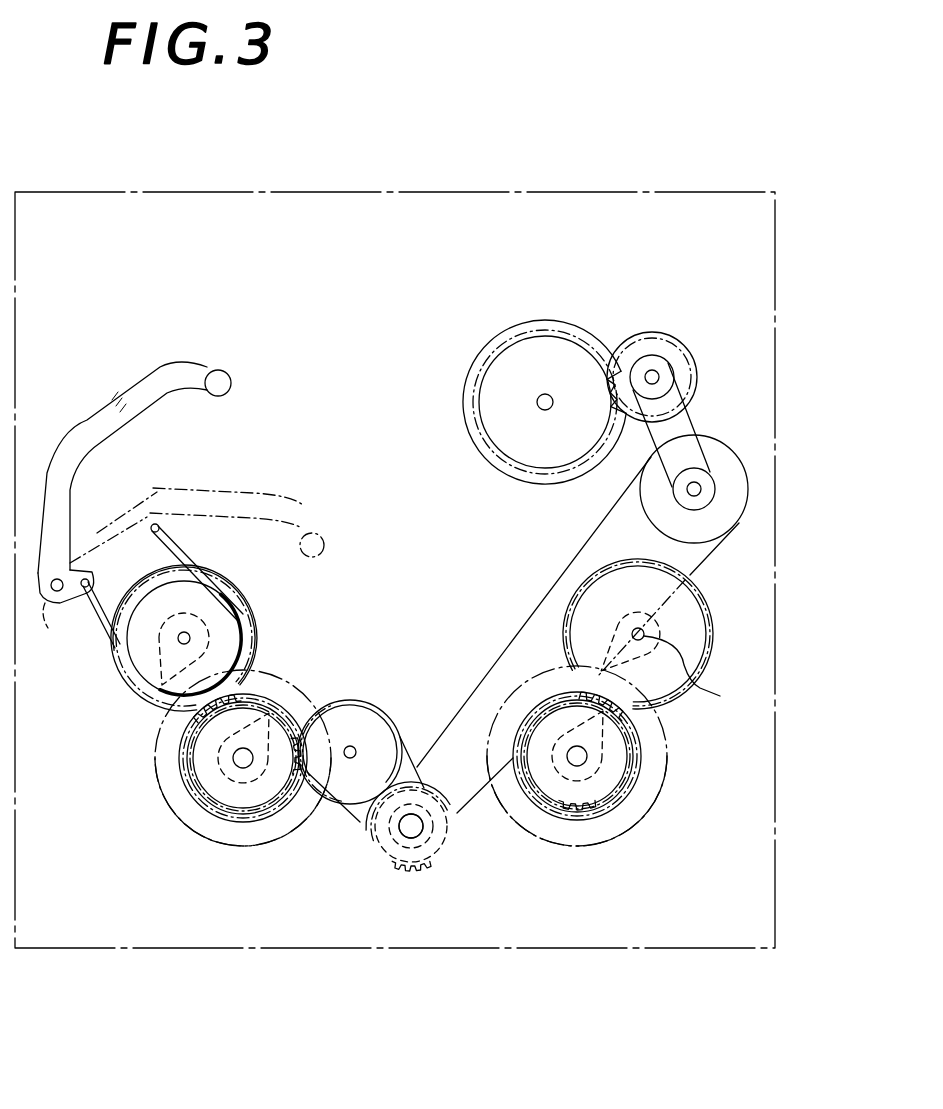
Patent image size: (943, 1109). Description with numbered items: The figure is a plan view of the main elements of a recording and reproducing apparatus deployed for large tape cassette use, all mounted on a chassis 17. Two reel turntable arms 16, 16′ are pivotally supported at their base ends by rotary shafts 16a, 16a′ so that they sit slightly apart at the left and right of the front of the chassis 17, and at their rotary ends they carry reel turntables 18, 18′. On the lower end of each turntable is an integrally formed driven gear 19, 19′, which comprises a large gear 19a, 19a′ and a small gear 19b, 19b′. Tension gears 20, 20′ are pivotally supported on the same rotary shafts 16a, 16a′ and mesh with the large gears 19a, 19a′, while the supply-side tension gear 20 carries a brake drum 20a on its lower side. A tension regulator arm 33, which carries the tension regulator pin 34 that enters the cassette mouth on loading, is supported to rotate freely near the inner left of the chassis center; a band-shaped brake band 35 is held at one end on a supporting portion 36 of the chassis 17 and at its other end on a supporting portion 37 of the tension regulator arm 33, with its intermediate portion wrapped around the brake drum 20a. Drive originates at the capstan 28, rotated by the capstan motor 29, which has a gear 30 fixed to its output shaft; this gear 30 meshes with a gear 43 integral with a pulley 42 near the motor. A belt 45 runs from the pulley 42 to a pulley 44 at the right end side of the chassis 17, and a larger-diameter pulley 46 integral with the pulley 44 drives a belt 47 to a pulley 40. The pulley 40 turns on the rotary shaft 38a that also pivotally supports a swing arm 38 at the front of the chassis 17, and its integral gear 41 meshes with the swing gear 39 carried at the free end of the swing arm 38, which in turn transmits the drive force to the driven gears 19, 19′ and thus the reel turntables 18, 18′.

The chassis 17 is at (643, 192).
The tension regulator arm 33 is at (120, 393).
The tension regulator pin 34 is at (220, 368).
The brake band 35 is at (198, 552).
The supporting portion 36 is at (153, 524).
The supporting portion 37 is at (55, 608).
The reel turntable arm 16 is at (242, 638).
The rotary shaft 16a is at (189, 634).
The tension gear 20 is at (130, 588).
The brake drum 20a is at (107, 640).
The driven gear 19 is at (168, 747).
The large gear 19a is at (193, 785).
The small gear 19b is at (217, 803).
The reel turntable 18 is at (222, 848).
The swing gear 39 is at (360, 700).
The swing arm 38 is at (357, 818).
The rotary shaft 38a is at (419, 860).
The pulley 40 is at (392, 848).
The gear 41 is at (455, 832).
The capstan motor 29 is at (548, 322).
The gear 30 is at (505, 333).
The capstan 28 is at (545, 411).
The gear 43 is at (665, 335).
The pulley 42 is at (667, 365).
The belt 45 is at (693, 420).
The pulley 44 is at (717, 485).
The pulley 46 is at (737, 512).
The belt 47 is at (703, 563).
The reel turntable arm 16′ is at (632, 632).
The tension gear 20′ is at (713, 637).
The rotary shaft 16a′ is at (706, 674).
The driven gear 19′ is at (643, 740).
The large gear 19a′ is at (640, 777).
The small gear 19b′ is at (620, 805).
The reel turntable 18′ is at (650, 867).